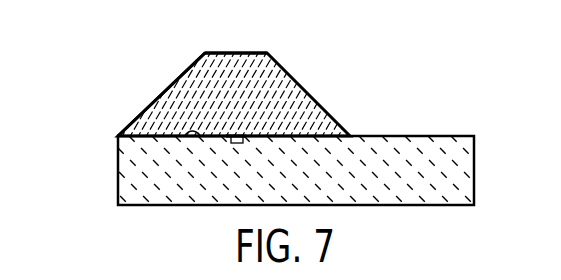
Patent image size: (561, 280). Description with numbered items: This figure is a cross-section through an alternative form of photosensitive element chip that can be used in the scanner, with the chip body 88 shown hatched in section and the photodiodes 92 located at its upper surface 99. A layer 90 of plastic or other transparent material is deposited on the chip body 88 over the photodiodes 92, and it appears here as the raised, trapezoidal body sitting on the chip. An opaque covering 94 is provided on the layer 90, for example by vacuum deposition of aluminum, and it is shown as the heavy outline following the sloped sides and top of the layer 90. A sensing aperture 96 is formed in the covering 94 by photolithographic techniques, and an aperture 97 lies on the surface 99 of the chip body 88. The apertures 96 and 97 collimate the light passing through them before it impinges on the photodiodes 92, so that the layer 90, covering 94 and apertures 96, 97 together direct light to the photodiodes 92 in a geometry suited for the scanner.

The substrate 88 is at (118, 170).
The layer 90 is at (312, 98).
The opaque covering 94 is at (185, 72).
The sensing apertures 96 is at (240, 46).
The apertures 97 is at (230, 121).
The surface 99 is at (184, 137).
The photodiodes 92 is at (232, 143).